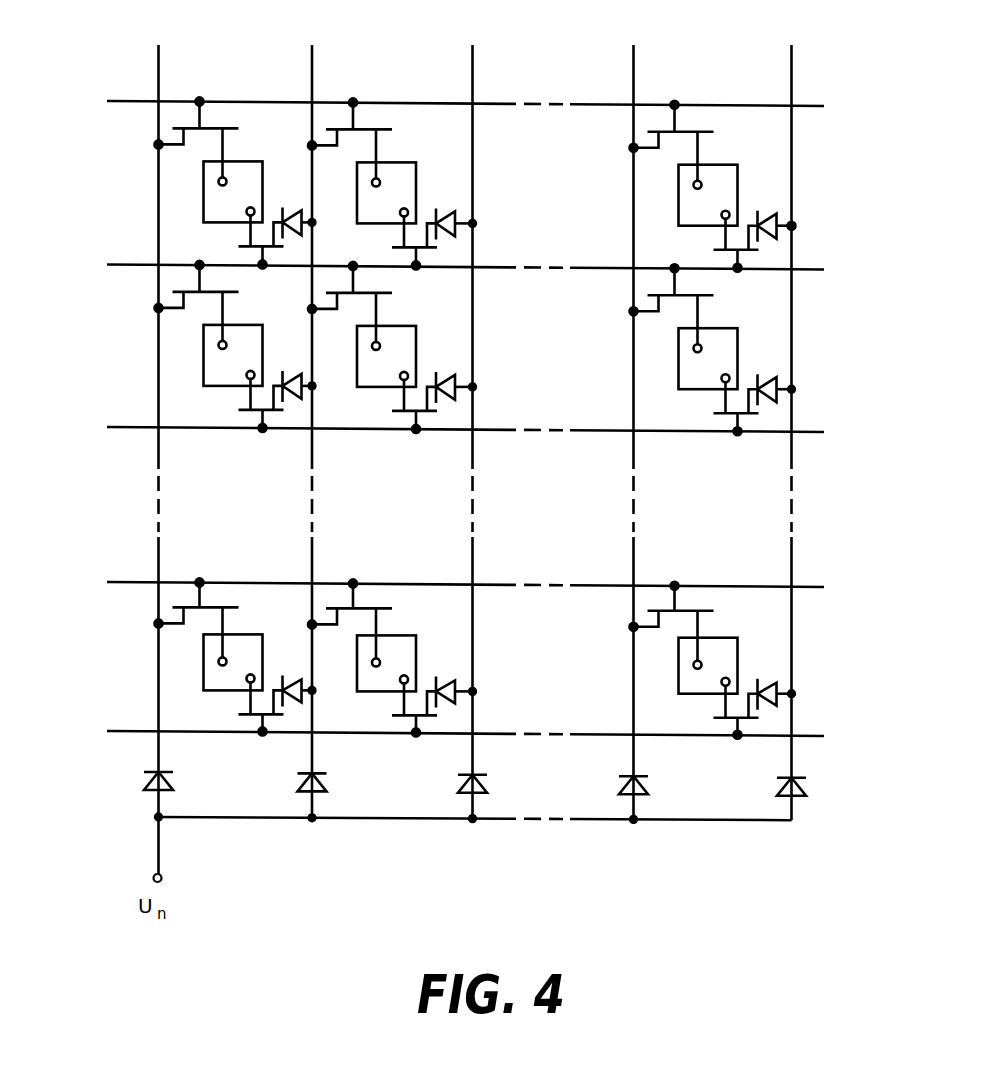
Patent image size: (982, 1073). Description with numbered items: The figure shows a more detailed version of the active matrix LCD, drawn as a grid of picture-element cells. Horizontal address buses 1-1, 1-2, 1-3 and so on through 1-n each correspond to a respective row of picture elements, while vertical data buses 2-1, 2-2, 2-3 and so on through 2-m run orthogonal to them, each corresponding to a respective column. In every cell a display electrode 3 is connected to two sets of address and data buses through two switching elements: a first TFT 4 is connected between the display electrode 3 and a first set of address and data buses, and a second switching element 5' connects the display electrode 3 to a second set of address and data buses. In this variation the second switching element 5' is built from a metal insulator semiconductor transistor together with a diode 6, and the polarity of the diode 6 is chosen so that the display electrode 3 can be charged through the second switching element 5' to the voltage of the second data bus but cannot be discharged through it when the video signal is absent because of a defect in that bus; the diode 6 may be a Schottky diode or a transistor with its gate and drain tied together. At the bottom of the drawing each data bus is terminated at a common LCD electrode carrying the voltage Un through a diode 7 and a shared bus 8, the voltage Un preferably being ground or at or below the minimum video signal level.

The display electrode 3 is at (756, 195).
The first TFT 4 is at (733, 141).
The second switching element 5' is at (805, 232).
The diode 6 is at (805, 220).
The diode 7 is at (797, 788).
The bus 8 is at (732, 822).
The address bus 1-1 is at (445, 101).
The address bus 1-2 is at (443, 264).
The address bus 1-3 is at (442, 427).
The address bus 1-n is at (441, 583).
The data bus 2-1 is at (158, 444).
The data bus 2-2 is at (311, 416).
The data bus 2-3 is at (477, 418).
The data bus 2-m is at (637, 419).